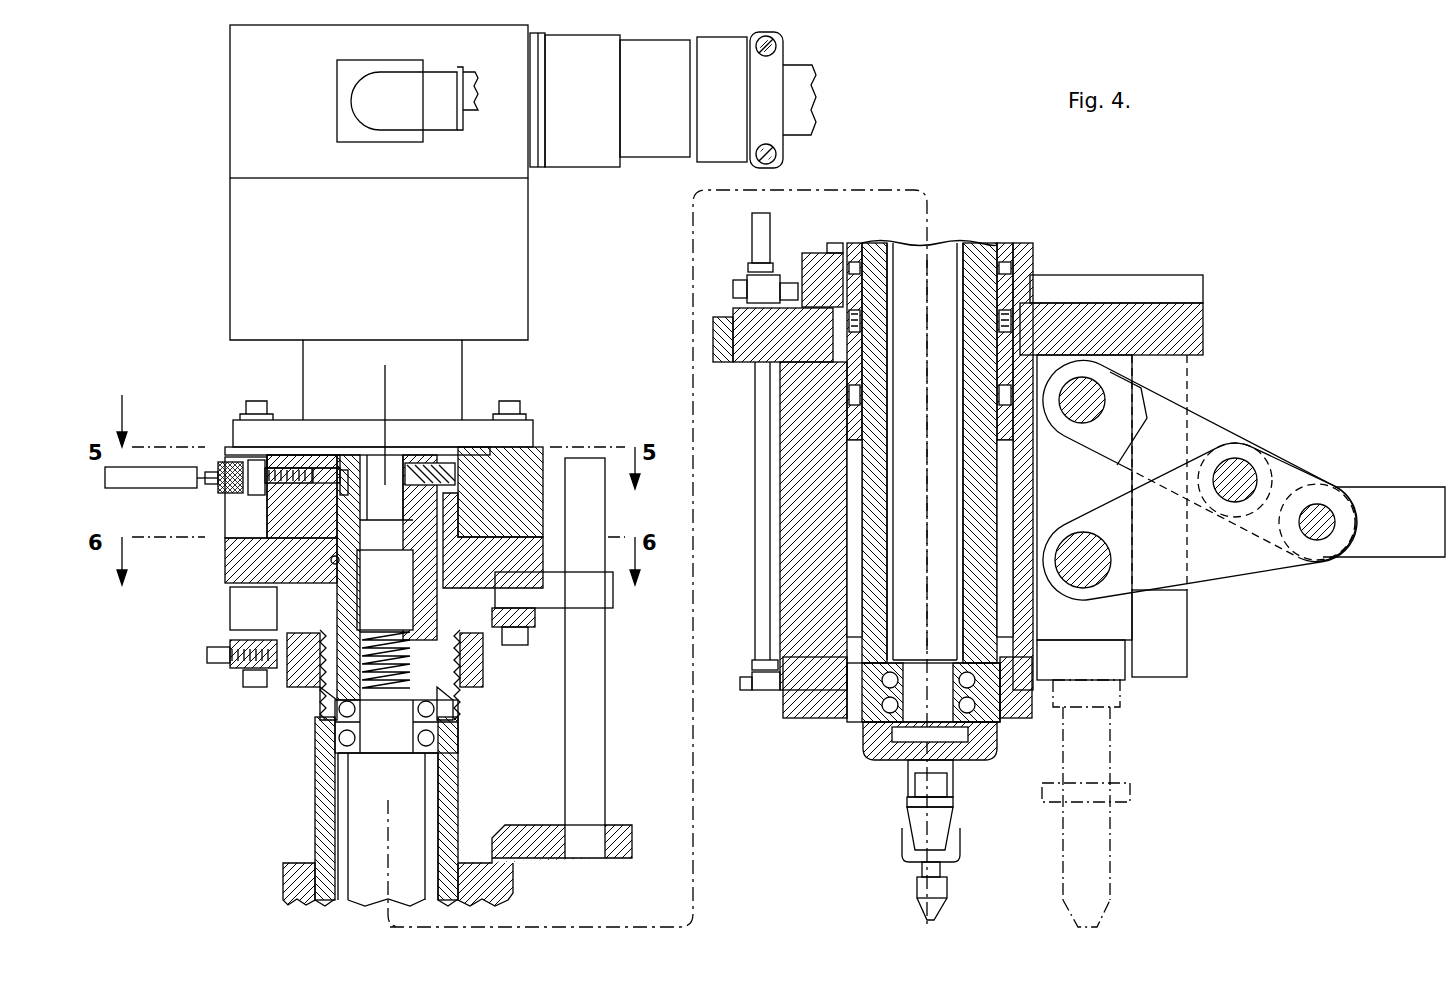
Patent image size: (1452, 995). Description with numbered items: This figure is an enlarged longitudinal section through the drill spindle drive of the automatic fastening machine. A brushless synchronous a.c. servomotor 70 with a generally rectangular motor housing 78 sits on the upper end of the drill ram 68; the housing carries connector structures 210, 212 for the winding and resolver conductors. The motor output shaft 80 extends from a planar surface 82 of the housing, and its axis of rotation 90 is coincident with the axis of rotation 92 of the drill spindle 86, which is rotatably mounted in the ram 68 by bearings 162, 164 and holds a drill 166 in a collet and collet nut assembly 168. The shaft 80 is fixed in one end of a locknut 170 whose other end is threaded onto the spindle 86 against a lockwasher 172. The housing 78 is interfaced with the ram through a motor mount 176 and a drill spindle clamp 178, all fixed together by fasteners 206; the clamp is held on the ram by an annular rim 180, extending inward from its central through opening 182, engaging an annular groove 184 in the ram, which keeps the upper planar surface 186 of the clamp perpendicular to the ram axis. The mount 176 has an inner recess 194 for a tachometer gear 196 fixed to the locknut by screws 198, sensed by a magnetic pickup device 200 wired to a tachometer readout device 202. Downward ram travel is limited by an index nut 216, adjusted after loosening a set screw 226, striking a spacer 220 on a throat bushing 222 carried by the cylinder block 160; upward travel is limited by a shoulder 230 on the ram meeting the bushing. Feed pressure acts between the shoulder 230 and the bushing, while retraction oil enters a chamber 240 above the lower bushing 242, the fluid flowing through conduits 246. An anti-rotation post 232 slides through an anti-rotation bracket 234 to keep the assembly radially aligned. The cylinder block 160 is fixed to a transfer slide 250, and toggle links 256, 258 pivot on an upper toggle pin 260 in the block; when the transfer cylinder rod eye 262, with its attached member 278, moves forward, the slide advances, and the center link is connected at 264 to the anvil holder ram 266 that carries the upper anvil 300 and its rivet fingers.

The brushless synchronous a.c. servomotor 70 is at (215, 176).
The motor housing 78 is at (242, 218).
The connector structure 212 is at (440, 125).
The connector structure 210 is at (655, 160).
The fasteners 206 is at (243, 410).
The planar surface 82 is at (470, 446).
The axis of rotation 90 is at (386, 382).
The motor mount 176 is at (540, 455).
The upper planar surface 186 is at (525, 535).
The motor output shaft 80 is at (398, 521).
The locknut 170 is at (345, 603).
The drill spindle clamp 178 is at (245, 538).
The annular groove 184 is at (320, 572).
The annular rim 180 is at (331, 560).
The central through opening 182 is at (315, 595).
The set screw 226 is at (207, 655).
The index nut 216 is at (483, 665).
The anti-rotation bracket 234 is at (613, 595).
The anti-rotation post 232 is at (607, 706).
The lockwasher 172 is at (320, 690).
The bearing 162 is at (440, 725).
The drill ram 68 is at (335, 527).
The drill spindle 86 is at (420, 800).
The axis of rotation 92 is at (388, 840).
The spacer 220 is at (283, 883).
The tachometer readout device 202 is at (118, 490).
The magnetic pickup device 200 is at (296, 437).
The tachometer gear 196 is at (338, 468).
The screws 198 is at (347, 470).
The inner recess 194 is at (355, 455).
The conduits 246 is at (752, 233).
The throat bushing 222 is at (815, 253).
The transfer slide 250 is at (745, 363).
The shoulder 230 is at (843, 380).
The cylinder block 160 is at (785, 441).
The chamber 240 is at (853, 478).
The lower bushing 242 is at (800, 720).
The bearing 164 is at (870, 722).
The collet and collet nut assembly 168 is at (892, 826).
The drill 166 is at (917, 887).
The upper anvil 300 is at (1112, 848).
The anvil holder ram 266 is at (1125, 628).
The toggle link 258 is at (1200, 435).
The upper toggle pin 260 is at (1120, 369).
The toggle link 256 is at (1230, 578).
The connection 264 is at (1111, 558).
The transfer cylinder rod eye 262 is at (1312, 510).
The rod 278 is at (1395, 560).